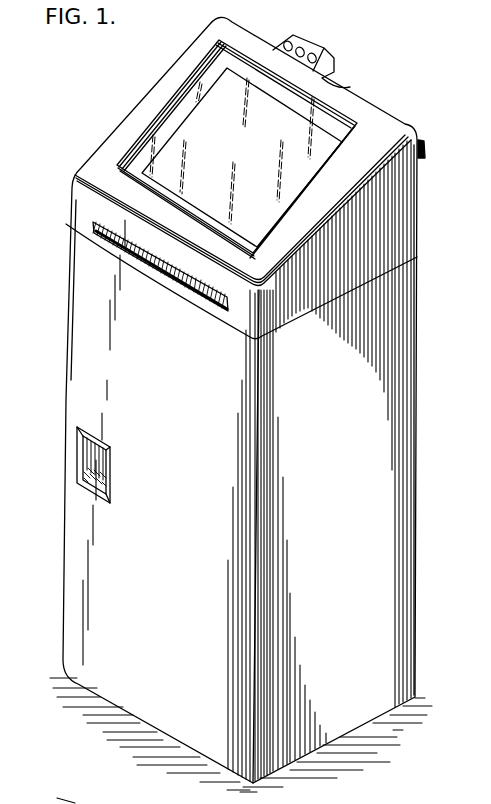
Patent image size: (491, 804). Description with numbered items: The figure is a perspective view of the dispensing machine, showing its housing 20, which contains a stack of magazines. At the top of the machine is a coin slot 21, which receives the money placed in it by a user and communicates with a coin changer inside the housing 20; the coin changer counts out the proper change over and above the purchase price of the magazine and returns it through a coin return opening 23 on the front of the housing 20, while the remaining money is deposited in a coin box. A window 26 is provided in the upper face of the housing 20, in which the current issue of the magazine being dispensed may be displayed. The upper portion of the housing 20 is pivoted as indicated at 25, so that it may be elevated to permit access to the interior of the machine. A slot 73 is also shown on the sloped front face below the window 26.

The housing 20 is at (420, 403).
The coin slot 21 is at (330, 61).
The coin return opening 23 is at (85, 458).
The pivot 25 is at (427, 153).
The window 26 is at (193, 120).
The dispensing slot 73 is at (187, 287).